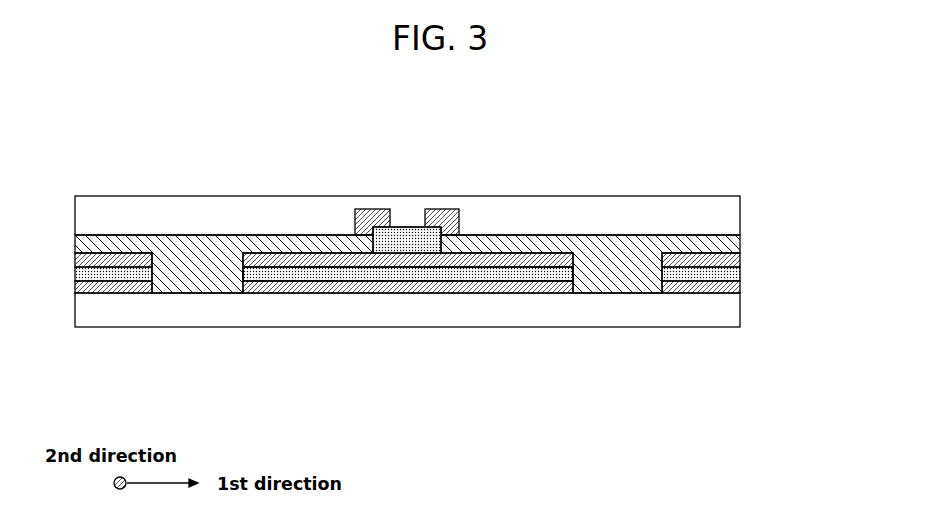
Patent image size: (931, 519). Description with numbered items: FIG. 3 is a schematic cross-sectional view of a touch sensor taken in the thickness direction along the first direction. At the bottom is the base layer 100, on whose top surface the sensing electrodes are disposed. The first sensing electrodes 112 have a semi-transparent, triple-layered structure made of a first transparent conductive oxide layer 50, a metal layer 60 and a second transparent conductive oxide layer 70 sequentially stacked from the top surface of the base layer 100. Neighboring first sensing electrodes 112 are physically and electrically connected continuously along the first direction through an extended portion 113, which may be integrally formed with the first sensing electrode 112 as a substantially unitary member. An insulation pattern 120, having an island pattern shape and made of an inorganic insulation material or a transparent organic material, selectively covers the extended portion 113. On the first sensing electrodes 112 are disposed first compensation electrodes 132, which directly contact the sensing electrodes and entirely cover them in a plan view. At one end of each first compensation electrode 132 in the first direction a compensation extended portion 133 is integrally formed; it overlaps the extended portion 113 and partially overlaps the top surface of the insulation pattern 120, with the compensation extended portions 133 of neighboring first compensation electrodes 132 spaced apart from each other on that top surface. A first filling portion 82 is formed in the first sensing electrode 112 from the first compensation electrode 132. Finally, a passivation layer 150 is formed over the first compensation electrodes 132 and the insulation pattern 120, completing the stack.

The base layer 100 is at (742, 307).
The passivation layer 150 is at (740, 213).
The first filling portion 82 is at (198, 272).
The first compensation electrode 132 is at (277, 262).
The first sensing electrode 112 is at (396, 343).
The first transparent conductive oxide layer 50 is at (268, 288).
The metal layer 60 is at (277, 276).
The second transparent conductive oxide layer 70 is at (312, 262).
The extended portion 113 is at (406, 270).
The compensation extended portion 133 is at (372, 210).
The insulation pattern 120 is at (409, 227).